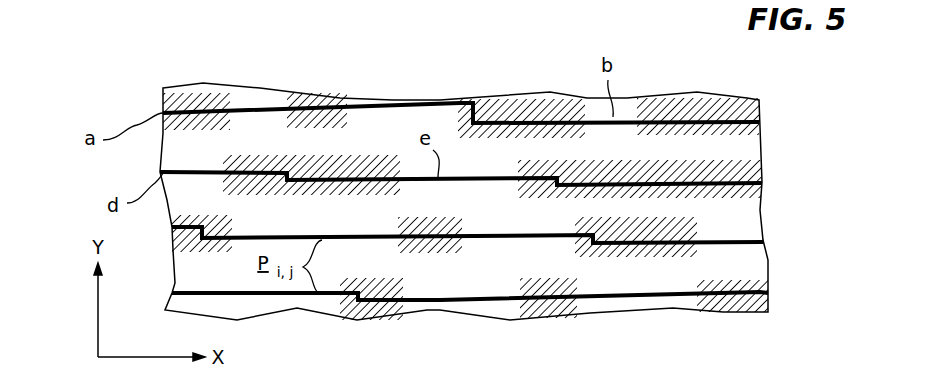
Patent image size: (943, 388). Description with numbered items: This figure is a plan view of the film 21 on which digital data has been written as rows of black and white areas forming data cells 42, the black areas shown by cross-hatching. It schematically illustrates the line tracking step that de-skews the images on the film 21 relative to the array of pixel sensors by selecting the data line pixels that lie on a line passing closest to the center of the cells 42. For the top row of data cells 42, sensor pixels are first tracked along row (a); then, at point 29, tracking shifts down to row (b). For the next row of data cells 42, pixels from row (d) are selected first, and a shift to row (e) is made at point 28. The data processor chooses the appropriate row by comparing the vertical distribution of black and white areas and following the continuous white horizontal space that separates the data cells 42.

The film 21 is at (747, 150).
The data cells 42 is at (217, 103).
The point 29 is at (466, 105).
The point 28 is at (298, 172).